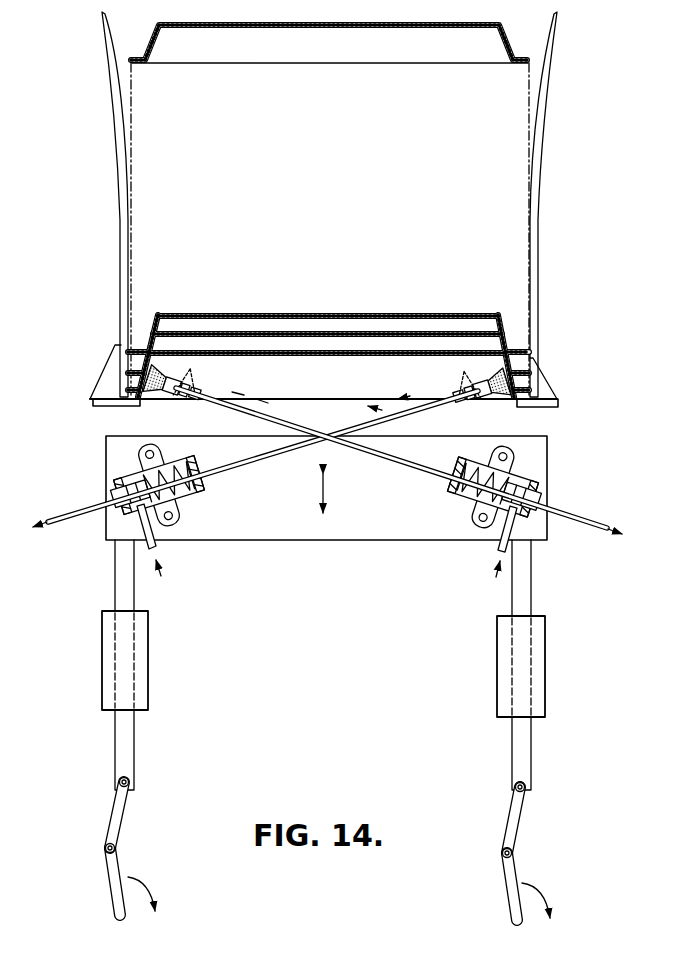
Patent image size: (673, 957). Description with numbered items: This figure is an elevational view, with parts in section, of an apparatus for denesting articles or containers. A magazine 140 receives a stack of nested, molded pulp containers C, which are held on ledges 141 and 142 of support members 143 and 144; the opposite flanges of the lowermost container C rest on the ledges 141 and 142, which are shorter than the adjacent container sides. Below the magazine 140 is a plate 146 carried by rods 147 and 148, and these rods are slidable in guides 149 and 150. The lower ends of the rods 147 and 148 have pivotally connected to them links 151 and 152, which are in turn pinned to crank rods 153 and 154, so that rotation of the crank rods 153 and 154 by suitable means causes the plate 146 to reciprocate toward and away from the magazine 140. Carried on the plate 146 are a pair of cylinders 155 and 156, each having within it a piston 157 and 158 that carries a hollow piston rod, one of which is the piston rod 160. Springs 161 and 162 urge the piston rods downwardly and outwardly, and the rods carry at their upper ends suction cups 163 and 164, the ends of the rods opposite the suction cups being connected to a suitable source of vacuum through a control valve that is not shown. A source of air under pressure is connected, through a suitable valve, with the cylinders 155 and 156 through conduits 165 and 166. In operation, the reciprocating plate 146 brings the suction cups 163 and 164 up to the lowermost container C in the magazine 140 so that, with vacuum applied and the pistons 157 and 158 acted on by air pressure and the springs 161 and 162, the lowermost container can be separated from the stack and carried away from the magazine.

The magazine 140 is at (552, 103).
The ledge 141 is at (130, 405).
The ledge 142 is at (518, 409).
The support member 143 is at (108, 381).
The support member 144 is at (553, 385).
The plate 146 is at (378, 515).
The rod 147 is at (118, 591).
The rod 148 is at (532, 593).
The guide 149 is at (149, 697).
The guide 150 is at (546, 710).
The link 151 is at (118, 826).
The link 152 is at (517, 828).
The crank rod 153 is at (113, 886).
The crank rod 154 is at (230, 468).
The cylinder 155 is at (183, 452).
The cylinder 156 is at (476, 464).
The piston 157 is at (137, 473).
The piston 158 is at (462, 507).
The hollow piston rod 160 is at (377, 459).
The spring 161 is at (190, 502).
The spring 162 is at (445, 490).
The suction cup 163 is at (160, 388).
The suction cup 164 is at (494, 390).
The conduit 165 is at (156, 548).
The conduit 166 is at (499, 548).
The container C is at (201, 333).